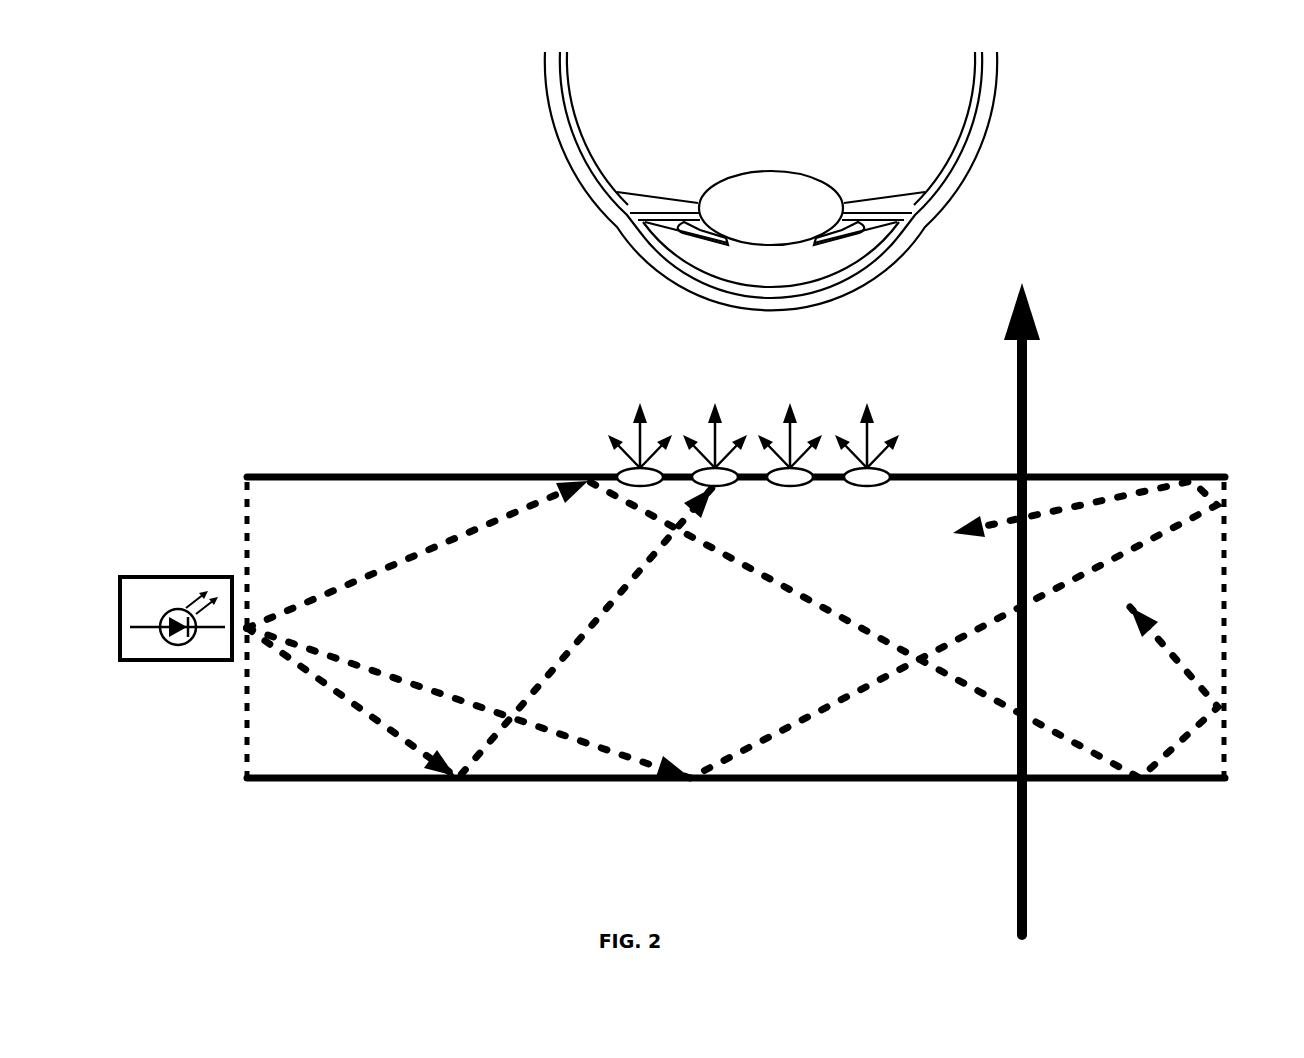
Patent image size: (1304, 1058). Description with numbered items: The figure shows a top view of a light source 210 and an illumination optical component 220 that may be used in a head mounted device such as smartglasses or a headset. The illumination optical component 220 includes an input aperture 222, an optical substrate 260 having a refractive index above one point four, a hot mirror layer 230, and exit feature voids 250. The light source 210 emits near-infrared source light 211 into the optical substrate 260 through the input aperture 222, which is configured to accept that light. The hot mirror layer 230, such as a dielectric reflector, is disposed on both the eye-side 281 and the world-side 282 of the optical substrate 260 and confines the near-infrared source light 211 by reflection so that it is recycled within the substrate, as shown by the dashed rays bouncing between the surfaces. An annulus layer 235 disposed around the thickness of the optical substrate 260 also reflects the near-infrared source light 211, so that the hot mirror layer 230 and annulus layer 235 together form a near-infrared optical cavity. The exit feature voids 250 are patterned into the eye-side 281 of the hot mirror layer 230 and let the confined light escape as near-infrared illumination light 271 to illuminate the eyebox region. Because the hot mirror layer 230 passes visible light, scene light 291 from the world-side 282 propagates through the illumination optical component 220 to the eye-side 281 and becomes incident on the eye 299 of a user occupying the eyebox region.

The eye 299 is at (967, 158).
The scene light 291 is at (1037, 315).
The eye-side 281 is at (1177, 453).
The world-side 282 is at (1117, 788).
The near-infrared illumination light 271 is at (640, 420).
The exit feature voids 250 is at (625, 470).
The hot mirror layer 230 is at (313, 473).
The annulus layer 235 is at (246, 523).
The optical substrate 260 is at (735, 628).
The illumination optical component 220 is at (230, 452).
The input aperture 222 is at (250, 600).
The near-infrared source light 211 is at (459, 540).
The light source 210 is at (135, 577).